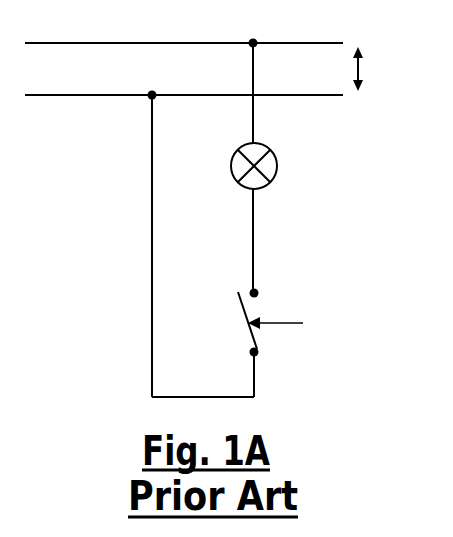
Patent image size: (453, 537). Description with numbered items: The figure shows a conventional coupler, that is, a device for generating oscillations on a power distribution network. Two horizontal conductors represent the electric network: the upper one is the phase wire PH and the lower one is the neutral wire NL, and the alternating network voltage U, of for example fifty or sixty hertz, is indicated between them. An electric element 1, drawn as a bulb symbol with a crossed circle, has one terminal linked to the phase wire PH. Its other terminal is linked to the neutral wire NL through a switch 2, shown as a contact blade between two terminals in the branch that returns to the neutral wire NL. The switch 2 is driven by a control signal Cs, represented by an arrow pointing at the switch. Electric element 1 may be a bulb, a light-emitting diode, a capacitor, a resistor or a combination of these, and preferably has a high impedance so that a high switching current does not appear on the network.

The electric element 1 is at (232, 168).
The switch 2 is at (247, 323).
The phase wire PH is at (184, 33).
The neutral wire NL is at (184, 85).
The alternating network voltage U is at (384, 69).
The control signal Cs is at (294, 323).